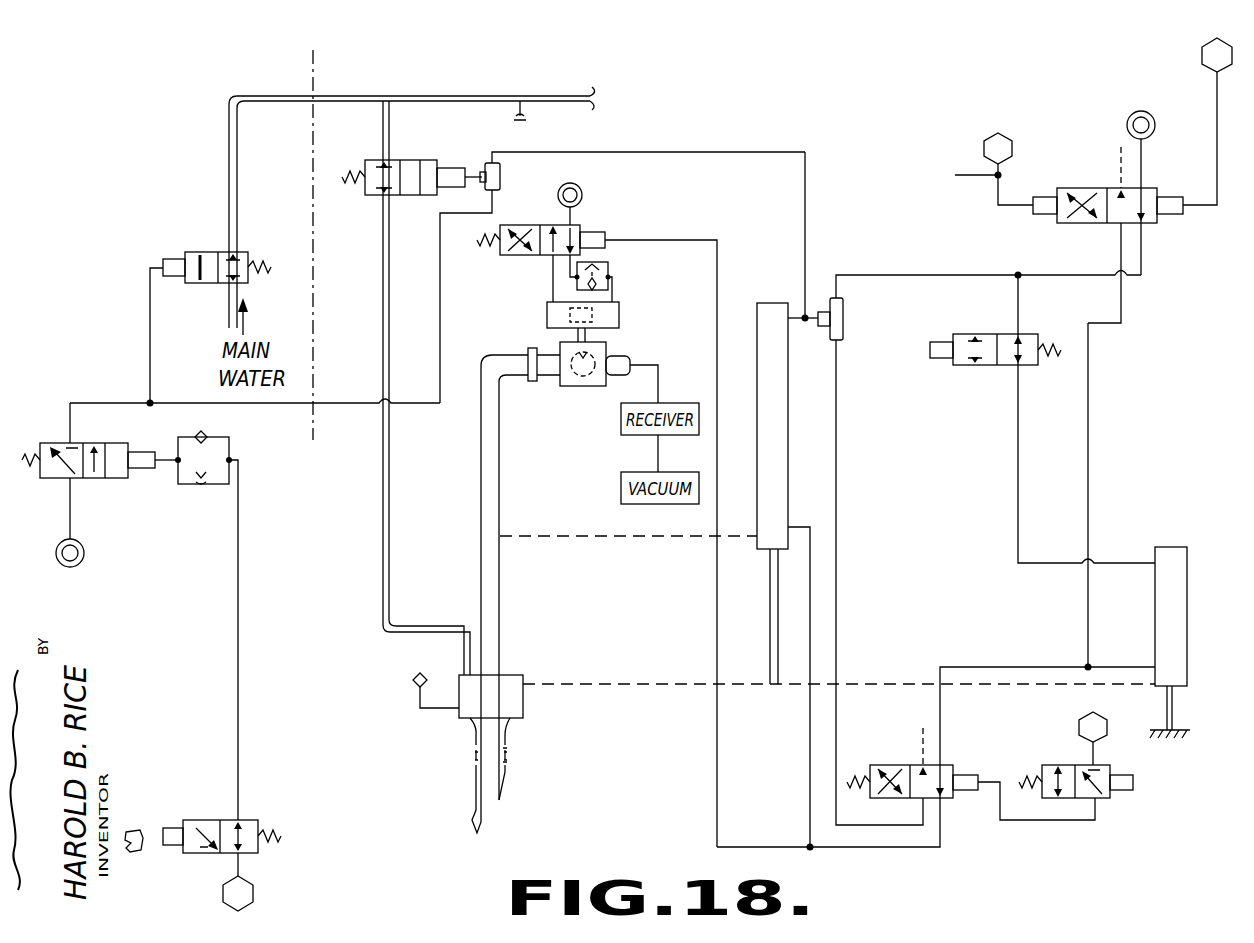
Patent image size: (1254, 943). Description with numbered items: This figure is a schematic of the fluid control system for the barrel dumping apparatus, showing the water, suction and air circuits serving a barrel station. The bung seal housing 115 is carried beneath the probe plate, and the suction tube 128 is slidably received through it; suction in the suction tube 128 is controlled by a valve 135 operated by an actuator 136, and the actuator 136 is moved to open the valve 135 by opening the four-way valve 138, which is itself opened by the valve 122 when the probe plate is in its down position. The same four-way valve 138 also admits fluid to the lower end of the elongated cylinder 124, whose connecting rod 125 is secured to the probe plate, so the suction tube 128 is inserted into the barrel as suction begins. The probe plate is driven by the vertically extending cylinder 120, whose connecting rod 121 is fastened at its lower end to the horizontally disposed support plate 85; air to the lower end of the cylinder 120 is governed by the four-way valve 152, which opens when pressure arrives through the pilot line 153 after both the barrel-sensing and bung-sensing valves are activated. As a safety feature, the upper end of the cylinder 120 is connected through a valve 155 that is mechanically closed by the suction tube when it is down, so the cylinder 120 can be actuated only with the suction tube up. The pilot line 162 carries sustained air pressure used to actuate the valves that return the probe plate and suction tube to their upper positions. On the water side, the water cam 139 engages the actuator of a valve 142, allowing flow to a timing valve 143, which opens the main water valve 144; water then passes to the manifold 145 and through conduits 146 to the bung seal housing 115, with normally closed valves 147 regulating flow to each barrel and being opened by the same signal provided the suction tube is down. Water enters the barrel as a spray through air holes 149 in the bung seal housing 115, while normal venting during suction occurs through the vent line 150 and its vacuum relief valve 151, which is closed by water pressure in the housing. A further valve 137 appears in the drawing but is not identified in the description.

The manifold 145 is at (470, 96).
The conduits 146 is at (390, 560).
The valves 147 is at (405, 160).
The main water valve 144 is at (240, 252).
The timing valve 143 is at (252, 485).
The valve 142 is at (212, 820).
The water cam 139 is at (133, 830).
The four-way valve 137 is at (585, 225).
The actuator 136 is at (620, 308).
The valve 135 is at (606, 350).
The suction tube 128 is at (500, 612).
The bung seal housing 115 is at (523, 706).
The air holes 149 is at (506, 762).
The vent line 150 is at (442, 712).
The vacuum relief valve 151 is at (416, 690).
The cylinder 124 is at (800, 501).
The connecting rod 125 is at (770, 625).
The valve 155 is at (1008, 334).
The four-way valve 152 is at (1147, 188).
The pilot line 153 is at (1205, 65).
The pilot line 162 is at (1005, 118).
The cylinder 120 is at (1187, 595).
The connecting rod 121 is at (1174, 710).
The support plate 85 is at (1178, 736).
The four-way valve 138 is at (955, 798).
The valve 122 is at (1110, 798).